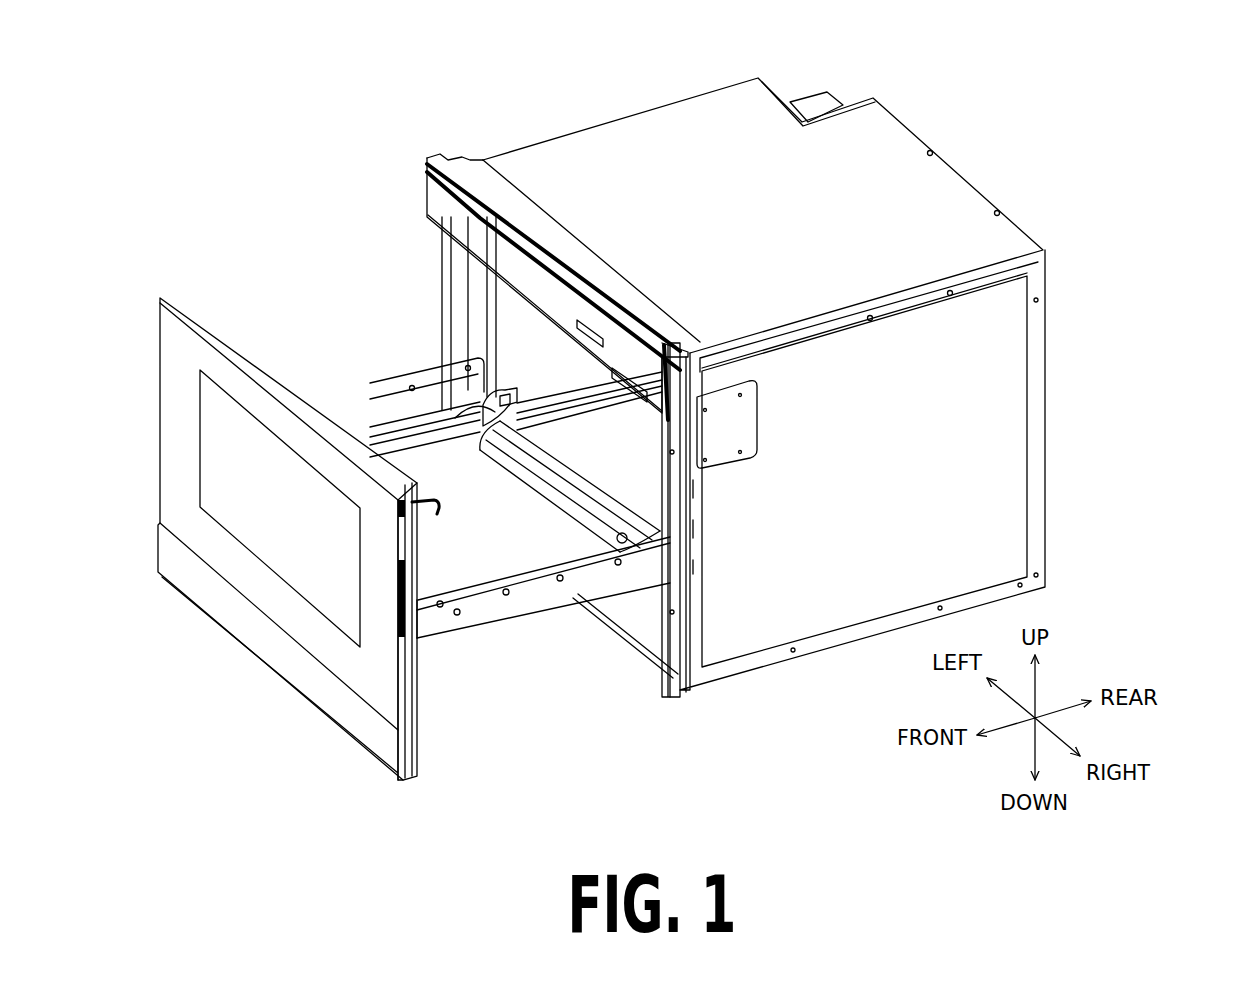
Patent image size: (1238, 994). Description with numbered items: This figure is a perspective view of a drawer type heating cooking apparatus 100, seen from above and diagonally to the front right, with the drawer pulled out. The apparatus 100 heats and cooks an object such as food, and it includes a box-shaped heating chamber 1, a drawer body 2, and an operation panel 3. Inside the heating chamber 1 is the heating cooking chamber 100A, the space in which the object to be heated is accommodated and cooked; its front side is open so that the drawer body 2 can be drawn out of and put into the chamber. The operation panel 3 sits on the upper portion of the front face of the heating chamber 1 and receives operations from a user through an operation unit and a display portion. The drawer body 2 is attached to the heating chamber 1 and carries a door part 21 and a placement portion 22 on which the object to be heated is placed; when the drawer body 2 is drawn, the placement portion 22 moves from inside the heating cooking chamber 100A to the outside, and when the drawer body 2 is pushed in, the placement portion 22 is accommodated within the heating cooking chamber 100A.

The drawer type heating cooking apparatus 100 is at (595, 396).
The heating cooking chamber 100A is at (510, 302).
The heating chamber 1 is at (678, 355).
The drawer body 2 is at (307, 506).
The operation panel 3 is at (432, 199).
The door part 21 is at (406, 755).
The placement portion 22 is at (382, 373).